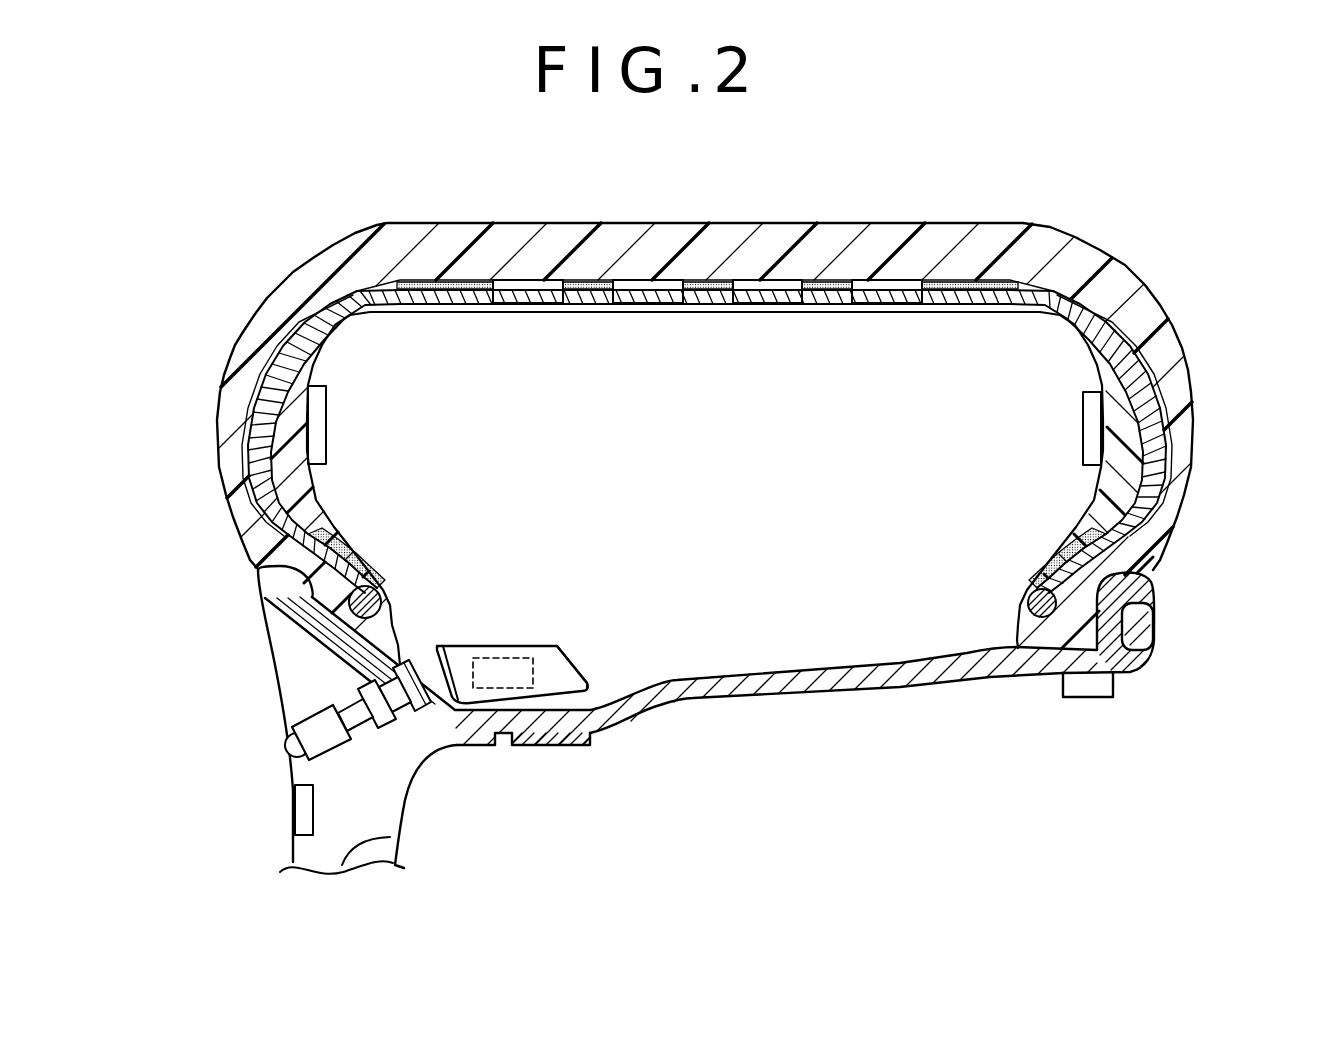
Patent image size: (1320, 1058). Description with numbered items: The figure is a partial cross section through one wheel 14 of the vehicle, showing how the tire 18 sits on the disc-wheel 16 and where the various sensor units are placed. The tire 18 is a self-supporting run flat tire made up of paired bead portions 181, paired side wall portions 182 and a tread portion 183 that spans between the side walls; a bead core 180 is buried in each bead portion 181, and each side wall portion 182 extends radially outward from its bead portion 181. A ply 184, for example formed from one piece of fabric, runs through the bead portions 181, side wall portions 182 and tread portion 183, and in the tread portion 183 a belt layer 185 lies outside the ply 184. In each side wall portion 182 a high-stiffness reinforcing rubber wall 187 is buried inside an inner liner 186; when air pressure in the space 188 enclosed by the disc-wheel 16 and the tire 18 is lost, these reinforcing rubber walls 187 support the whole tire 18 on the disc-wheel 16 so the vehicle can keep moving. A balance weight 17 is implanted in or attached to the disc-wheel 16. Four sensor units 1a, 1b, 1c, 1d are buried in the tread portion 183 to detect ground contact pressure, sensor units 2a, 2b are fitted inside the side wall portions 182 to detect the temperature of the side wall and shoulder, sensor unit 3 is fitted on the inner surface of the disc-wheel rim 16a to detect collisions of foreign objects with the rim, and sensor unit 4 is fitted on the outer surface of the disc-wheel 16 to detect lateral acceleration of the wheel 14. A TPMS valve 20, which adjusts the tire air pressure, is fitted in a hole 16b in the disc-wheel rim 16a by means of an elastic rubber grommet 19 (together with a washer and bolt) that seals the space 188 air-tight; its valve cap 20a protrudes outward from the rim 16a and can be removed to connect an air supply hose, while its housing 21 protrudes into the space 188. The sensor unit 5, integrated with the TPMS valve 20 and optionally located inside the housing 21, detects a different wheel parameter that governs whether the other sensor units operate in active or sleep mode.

The wheel 14 is at (317, 213).
The tire 18 is at (1108, 249).
The tread portion 183 is at (684, 220).
The side wall portion 182 is at (228, 355).
The ply 184 is at (293, 503).
The belt layer 185 is at (583, 281).
The inner liner 186 is at (437, 300).
The reinforcing rubber wall 187 is at (318, 358).
The space 188 is at (728, 508).
The bead core 180 is at (384, 594).
The bead portion 181 is at (394, 600).
The sensor unit 1a is at (527, 293).
The sensor unit 1b is at (647, 293).
The sensor unit 1c is at (767, 293).
The sensor unit 1d is at (887, 293).
The sensor unit 2a is at (318, 425).
The sensor unit 2b is at (1092, 428).
The disc-wheel 16 is at (325, 840).
The disc-wheel rim 16a is at (268, 595).
The hole 16b is at (297, 700).
The balance weight 17 is at (567, 742).
The grommet 19 is at (464, 748).
The TPMS valve 20 is at (540, 639).
The valve cap 20a is at (307, 743).
The housing 21 is at (575, 680).
The sensor unit 3 is at (1068, 690).
The sensor unit 4 is at (297, 813).
The sensor unit 5 is at (503, 657).